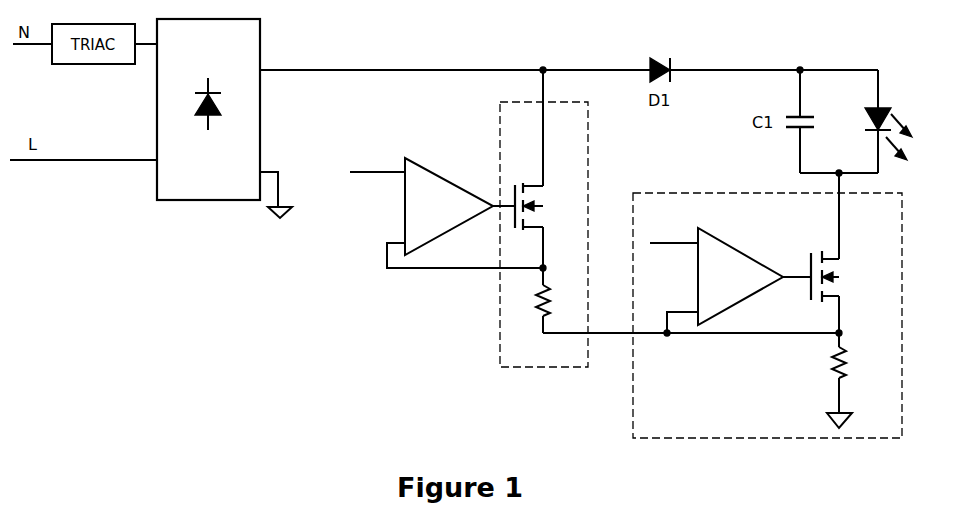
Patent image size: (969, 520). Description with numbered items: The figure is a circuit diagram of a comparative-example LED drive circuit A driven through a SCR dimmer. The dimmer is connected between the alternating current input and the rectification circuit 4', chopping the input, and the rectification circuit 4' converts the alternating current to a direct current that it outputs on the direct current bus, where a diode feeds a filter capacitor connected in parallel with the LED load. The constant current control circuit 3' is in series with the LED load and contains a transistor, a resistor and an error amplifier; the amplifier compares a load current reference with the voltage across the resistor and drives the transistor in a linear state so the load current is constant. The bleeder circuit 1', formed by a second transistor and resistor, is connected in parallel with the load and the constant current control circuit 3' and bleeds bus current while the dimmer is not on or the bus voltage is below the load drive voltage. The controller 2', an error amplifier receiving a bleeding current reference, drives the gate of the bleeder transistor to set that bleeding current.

The bleeder circuit 1' is at (462, 218).
The controller 2' is at (448, 185).
The constant current control circuit 3' is at (729, 305).
The rectification circuit 4' is at (246, 105).
The LED drive circuit A is at (310, 305).